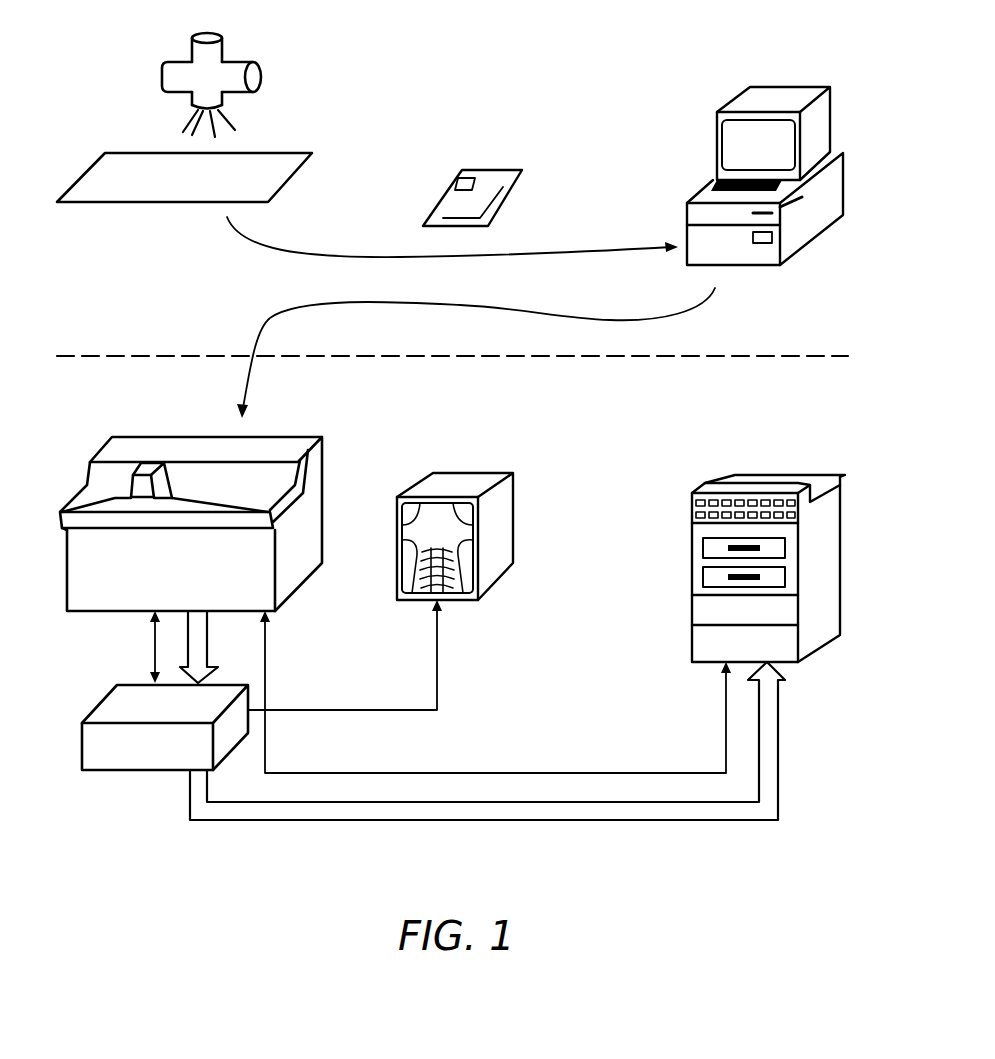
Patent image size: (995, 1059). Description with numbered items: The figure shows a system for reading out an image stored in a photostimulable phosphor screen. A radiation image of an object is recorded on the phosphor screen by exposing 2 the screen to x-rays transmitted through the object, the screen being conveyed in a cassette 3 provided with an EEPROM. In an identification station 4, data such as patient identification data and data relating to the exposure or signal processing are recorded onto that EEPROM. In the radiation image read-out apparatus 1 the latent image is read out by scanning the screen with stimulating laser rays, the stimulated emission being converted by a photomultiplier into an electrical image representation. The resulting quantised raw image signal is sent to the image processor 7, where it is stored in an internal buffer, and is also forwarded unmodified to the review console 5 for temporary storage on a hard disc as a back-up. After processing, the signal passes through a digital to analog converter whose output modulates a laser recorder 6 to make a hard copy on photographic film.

The radiation image read-out apparatus 1 is at (95, 482).
The exposure 2 is at (211, 82).
The cassette 3 is at (488, 180).
The identification station 4 is at (803, 233).
The review console 5 is at (500, 535).
The laser recorder 6 is at (817, 640).
The image processor 7 is at (140, 758).